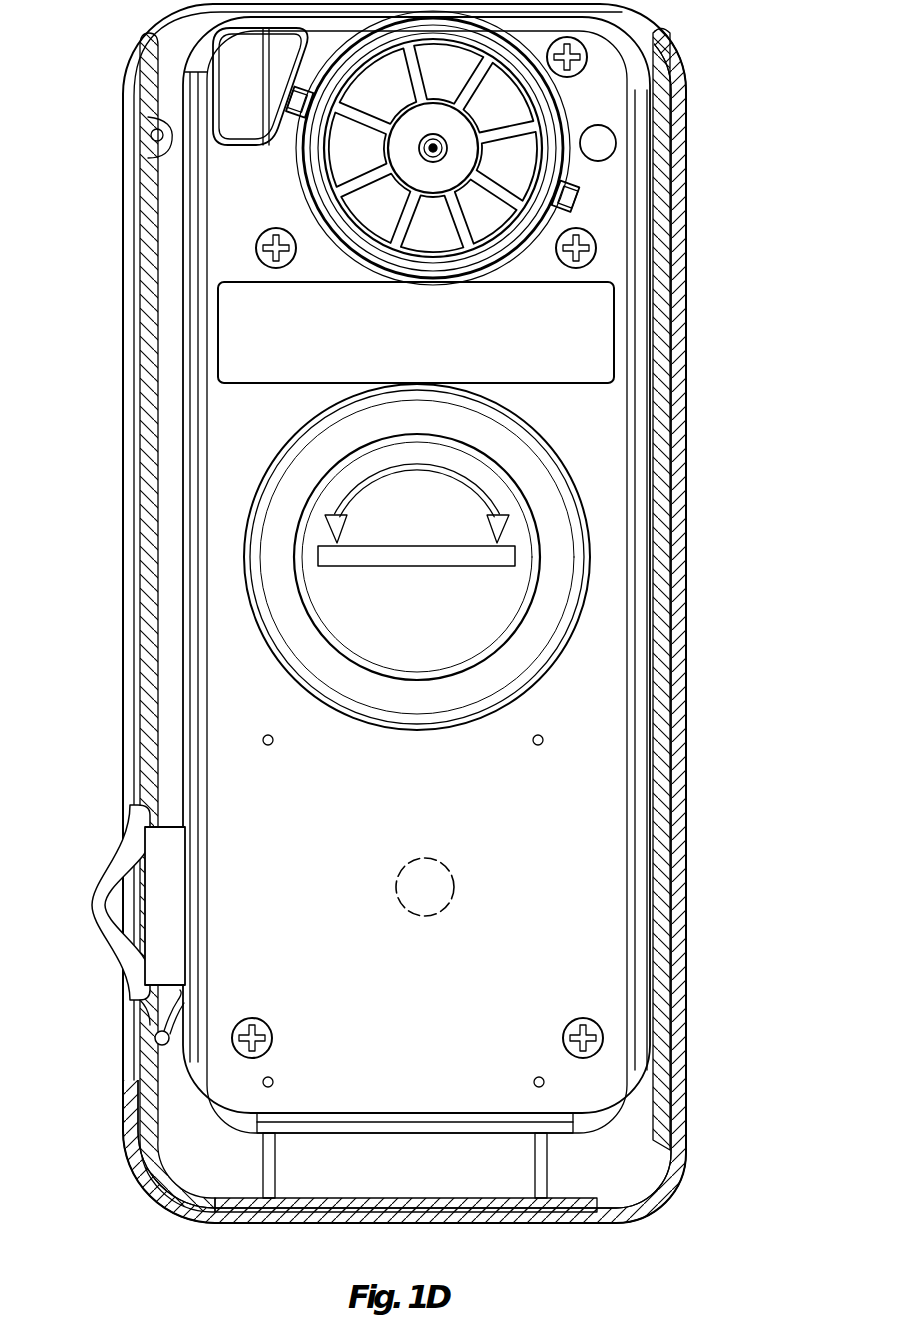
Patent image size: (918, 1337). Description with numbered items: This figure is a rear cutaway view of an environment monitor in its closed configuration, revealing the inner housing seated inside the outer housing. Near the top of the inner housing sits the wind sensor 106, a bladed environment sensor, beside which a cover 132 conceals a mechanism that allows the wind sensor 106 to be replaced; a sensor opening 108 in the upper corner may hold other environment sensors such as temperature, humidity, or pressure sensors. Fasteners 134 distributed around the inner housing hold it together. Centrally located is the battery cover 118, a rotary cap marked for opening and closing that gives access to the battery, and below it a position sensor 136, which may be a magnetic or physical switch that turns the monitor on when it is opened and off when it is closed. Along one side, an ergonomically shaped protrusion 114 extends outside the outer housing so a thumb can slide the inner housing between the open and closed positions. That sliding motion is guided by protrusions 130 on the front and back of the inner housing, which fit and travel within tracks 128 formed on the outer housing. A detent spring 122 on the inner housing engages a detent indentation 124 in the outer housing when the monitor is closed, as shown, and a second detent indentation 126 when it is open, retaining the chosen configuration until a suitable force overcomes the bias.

The wind sensor 106 is at (457, 127).
The sensor opening 108 is at (233, 88).
The protrusion 114 is at (122, 882).
The battery cover 118 is at (555, 553).
The detent spring 122 is at (157, 1041).
The detent indentation 124 is at (154, 1032).
The detent indentation 126 is at (153, 392).
The tracks 128 is at (263, 1165).
The protrusions 130 is at (262, 740).
The cover 132 is at (600, 141).
The fasteners 134 is at (585, 248).
The position sensor 136 is at (453, 880).